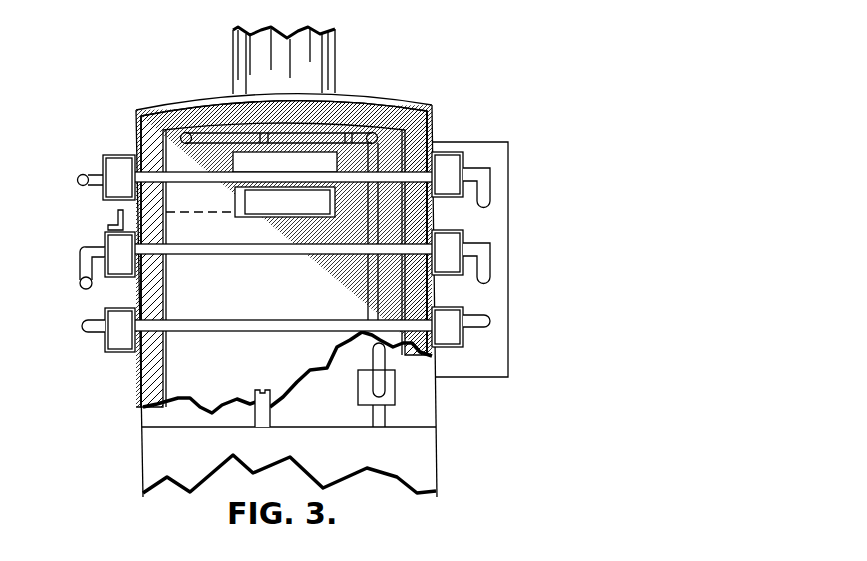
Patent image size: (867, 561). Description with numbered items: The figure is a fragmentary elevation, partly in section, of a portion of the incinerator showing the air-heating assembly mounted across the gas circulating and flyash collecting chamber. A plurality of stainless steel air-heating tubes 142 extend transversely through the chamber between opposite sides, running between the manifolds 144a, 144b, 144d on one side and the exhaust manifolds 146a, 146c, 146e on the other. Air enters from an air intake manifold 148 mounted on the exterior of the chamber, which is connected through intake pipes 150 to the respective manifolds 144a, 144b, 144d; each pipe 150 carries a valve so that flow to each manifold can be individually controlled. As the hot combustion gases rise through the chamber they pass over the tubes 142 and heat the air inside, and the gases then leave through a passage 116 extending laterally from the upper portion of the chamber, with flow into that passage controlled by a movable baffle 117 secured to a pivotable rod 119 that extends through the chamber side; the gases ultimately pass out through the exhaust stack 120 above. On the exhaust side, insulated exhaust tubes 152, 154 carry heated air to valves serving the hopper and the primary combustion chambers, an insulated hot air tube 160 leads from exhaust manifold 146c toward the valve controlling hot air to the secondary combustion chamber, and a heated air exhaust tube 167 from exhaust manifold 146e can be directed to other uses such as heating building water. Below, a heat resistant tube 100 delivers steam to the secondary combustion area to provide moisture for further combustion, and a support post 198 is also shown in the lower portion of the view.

The steam tube 100 is at (385, 413).
The passage 116 is at (233, 160).
The movable baffle 117 is at (240, 194).
The pivotable rod 119 is at (118, 218).
The exhaust stack 120 is at (325, 68).
The air-heating tubes 142 is at (272, 248).
The manifold 144a is at (447, 160).
The manifold 144b is at (455, 240).
The manifold 144d is at (452, 338).
The exhaust manifold 146a is at (117, 158).
The exhaust manifold 146c is at (118, 243).
The exhaust manifold 146e is at (120, 345).
The air intake manifold 148 is at (508, 210).
The intake pipes 150 is at (492, 171).
The insulated exhaust tube 152 is at (78, 178).
The insulated exhaust tube 154 is at (80, 251).
The insulated hot air tube 160 is at (80, 280).
The heated air exhaust tube 167 is at (84, 325).
The support post 198 is at (270, 416).